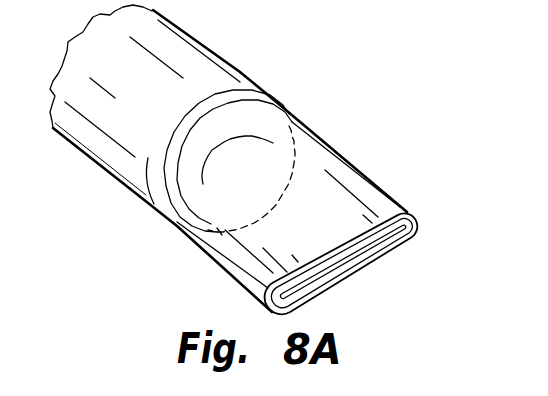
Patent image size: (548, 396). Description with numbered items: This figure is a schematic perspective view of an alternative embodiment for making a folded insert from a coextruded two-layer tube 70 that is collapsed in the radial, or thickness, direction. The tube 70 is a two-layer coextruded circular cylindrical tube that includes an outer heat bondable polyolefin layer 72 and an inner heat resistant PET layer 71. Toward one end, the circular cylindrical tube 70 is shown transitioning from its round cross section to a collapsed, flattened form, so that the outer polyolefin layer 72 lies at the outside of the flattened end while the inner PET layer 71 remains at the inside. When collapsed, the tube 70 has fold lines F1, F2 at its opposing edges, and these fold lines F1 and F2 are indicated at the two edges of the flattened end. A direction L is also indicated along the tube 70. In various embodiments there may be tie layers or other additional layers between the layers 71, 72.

The two-layer coextruded circular cylindrical tube 70 is at (255, 72).
The inner heat resistant PET layer 71 is at (387, 245).
The outer heat bondable polyolefin layer 72 is at (375, 218).
The fold line F1 is at (417, 222).
The fold line F2 is at (268, 310).
The longitudinal direction L is at (138, 255).